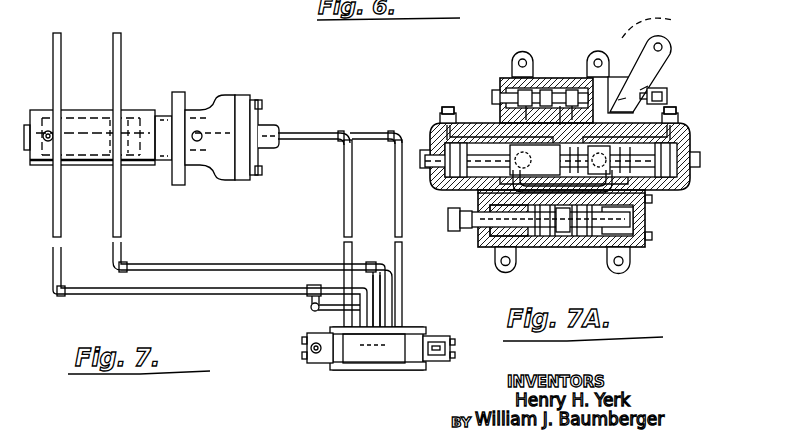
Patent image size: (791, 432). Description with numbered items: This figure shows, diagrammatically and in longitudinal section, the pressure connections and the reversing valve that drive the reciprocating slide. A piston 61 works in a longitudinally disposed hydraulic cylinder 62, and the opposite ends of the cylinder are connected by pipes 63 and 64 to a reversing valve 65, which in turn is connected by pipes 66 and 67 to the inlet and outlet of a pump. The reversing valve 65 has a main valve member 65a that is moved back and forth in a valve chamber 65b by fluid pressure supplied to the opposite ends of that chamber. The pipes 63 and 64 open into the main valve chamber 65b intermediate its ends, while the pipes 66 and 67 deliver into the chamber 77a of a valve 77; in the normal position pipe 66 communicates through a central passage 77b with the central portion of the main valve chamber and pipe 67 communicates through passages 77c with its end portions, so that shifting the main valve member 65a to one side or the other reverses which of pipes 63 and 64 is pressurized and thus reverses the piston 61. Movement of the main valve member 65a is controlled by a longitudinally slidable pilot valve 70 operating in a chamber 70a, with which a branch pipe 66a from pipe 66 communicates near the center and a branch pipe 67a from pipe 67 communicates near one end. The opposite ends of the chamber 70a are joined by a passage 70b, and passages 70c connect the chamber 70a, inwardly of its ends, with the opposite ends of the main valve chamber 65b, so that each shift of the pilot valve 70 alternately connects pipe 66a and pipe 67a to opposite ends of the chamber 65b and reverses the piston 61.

In FIG. 7, the piston 61 is at (266, 130).
In FIG. 7, the hydraulic cylinder 62 is at (88, 116).
In FIG. 7, the pipe 63 is at (331, 233).
In FIG. 7, the pipe 64 is at (370, 130).
In FIG. 7, the reversing valve 65 is at (356, 372).
In FIG. 7A, the reversing valve 65 is at (560, 247).
In FIG. 7A, the main valve member 65a is at (482, 160).
In FIG. 7A, the valve chamber 65b is at (443, 190).
In FIG. 7, the pipe 66 is at (229, 265).
In FIG. 7A, the pipe 66 is at (603, 250).
In FIG. 7, the branch pipe 66a is at (383, 304).
In FIG. 7A, the branch pipe 66a is at (580, 78).
In FIG. 7, the pipe 67 is at (271, 296).
In FIG. 7A, the pipe 67 is at (543, 247).
In FIG. 7, the branch pipe 67a is at (315, 312).
In FIG. 7A, the branch pipe 67a is at (533, 77).
In FIG. 7, the pilot valve 70 is at (422, 362).
In FIG. 7A, the pilot valve 70 is at (663, 97).
In FIG. 7A, the chamber 70a is at (547, 90).
In FIG. 7A, the passage 70b is at (646, 36).
In FIG. 7A, the passages 70c is at (488, 120).
In FIG. 7A, the valve 77 is at (465, 230).
In FIG. 7A, the chamber 77a is at (633, 253).
In FIG. 7A, the central passage 77b is at (574, 250).
In FIG. 7A, the passages 77c is at (552, 250).